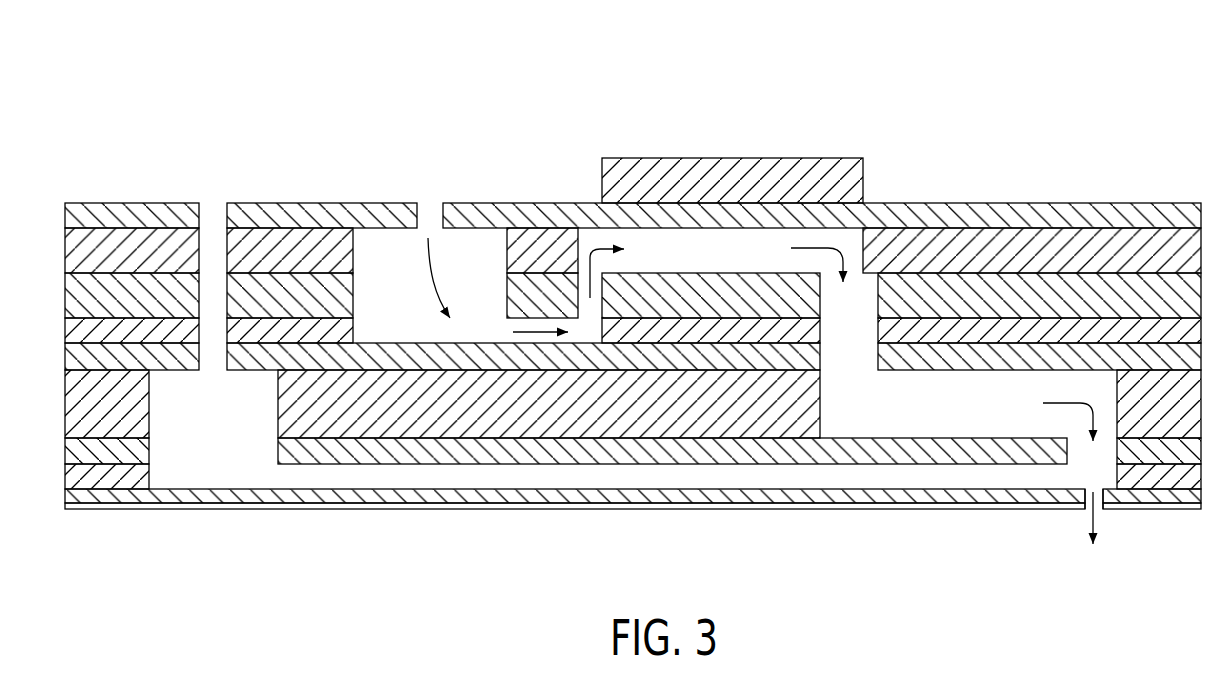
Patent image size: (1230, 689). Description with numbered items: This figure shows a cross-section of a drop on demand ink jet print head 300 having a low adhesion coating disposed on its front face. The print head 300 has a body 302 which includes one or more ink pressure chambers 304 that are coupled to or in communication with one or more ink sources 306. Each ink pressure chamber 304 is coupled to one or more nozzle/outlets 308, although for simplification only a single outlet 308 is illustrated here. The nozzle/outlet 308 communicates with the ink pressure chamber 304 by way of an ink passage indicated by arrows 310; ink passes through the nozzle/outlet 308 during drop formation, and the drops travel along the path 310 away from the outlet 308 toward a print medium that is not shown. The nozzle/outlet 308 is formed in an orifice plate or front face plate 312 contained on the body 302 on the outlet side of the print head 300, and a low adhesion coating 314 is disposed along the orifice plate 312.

The drop on demand ink jet print head 300 is at (110, 95).
The body 302 is at (182, 530).
The ink pressure chamber 304 is at (705, 248).
The ink source 306 is at (430, 213).
The nozzle/outlet 308 is at (1087, 508).
The ink passage 310 is at (598, 243).
The orifice plate 312 is at (1190, 498).
The low adhesion coating 314 is at (565, 512).